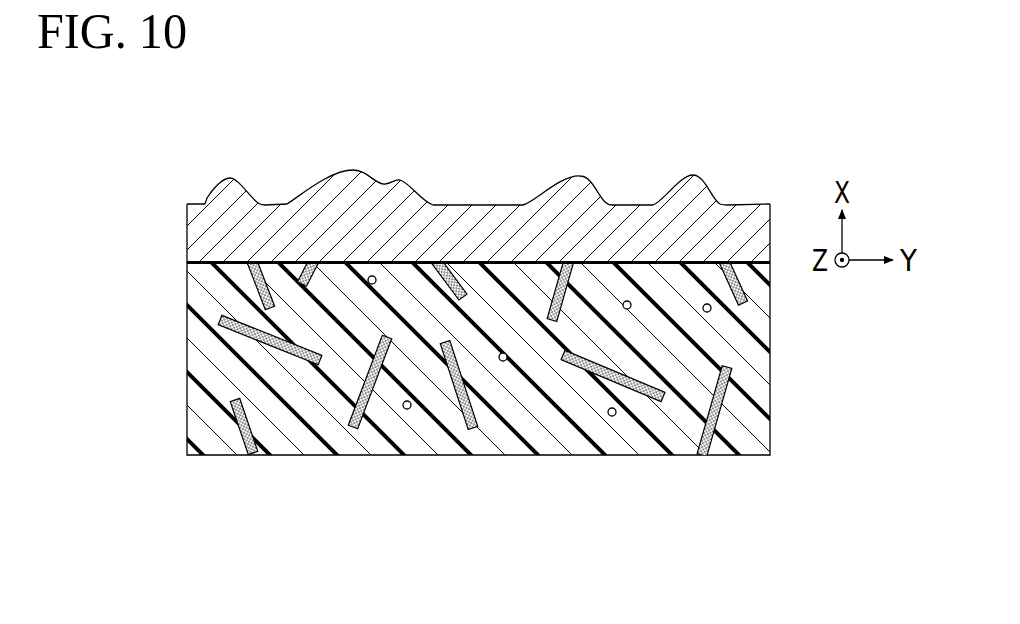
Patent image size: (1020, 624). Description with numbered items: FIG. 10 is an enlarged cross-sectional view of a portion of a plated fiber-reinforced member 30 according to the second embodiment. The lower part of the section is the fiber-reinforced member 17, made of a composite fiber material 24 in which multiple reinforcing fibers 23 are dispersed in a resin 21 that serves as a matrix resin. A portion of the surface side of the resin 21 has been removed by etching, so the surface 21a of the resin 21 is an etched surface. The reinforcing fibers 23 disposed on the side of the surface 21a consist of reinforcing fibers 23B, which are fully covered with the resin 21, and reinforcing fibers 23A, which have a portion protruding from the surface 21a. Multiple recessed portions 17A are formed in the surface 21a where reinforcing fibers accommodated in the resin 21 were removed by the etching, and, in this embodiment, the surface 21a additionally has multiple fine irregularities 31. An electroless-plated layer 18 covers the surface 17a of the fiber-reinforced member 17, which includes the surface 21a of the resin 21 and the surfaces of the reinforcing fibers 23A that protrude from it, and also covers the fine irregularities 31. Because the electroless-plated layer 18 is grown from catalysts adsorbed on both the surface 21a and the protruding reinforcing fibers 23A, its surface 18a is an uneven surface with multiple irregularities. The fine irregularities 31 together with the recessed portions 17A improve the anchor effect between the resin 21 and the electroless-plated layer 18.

The plated fiber-reinforced member 30 is at (178, 169).
The fiber-reinforced member 17 is at (775, 334).
The electroless-plated layer 18 is at (478, 215).
The surface of electroless-plated layer 18a is at (413, 185).
The recessed portions 17A is at (513, 261).
The surface of fiber-reinforced member 17a is at (613, 261).
The composite fiber material 24 is at (577, 563).
The resin 21 is at (556, 445).
The surface of resin 21a is at (367, 260).
The reinforcing fibers 23 is at (528, 516).
The reinforcing fibers having a protruding portion 23A is at (433, 288).
The reinforcing fibers fully covered with resin 23B is at (503, 362).
The fine irregularities 31 is at (282, 250).